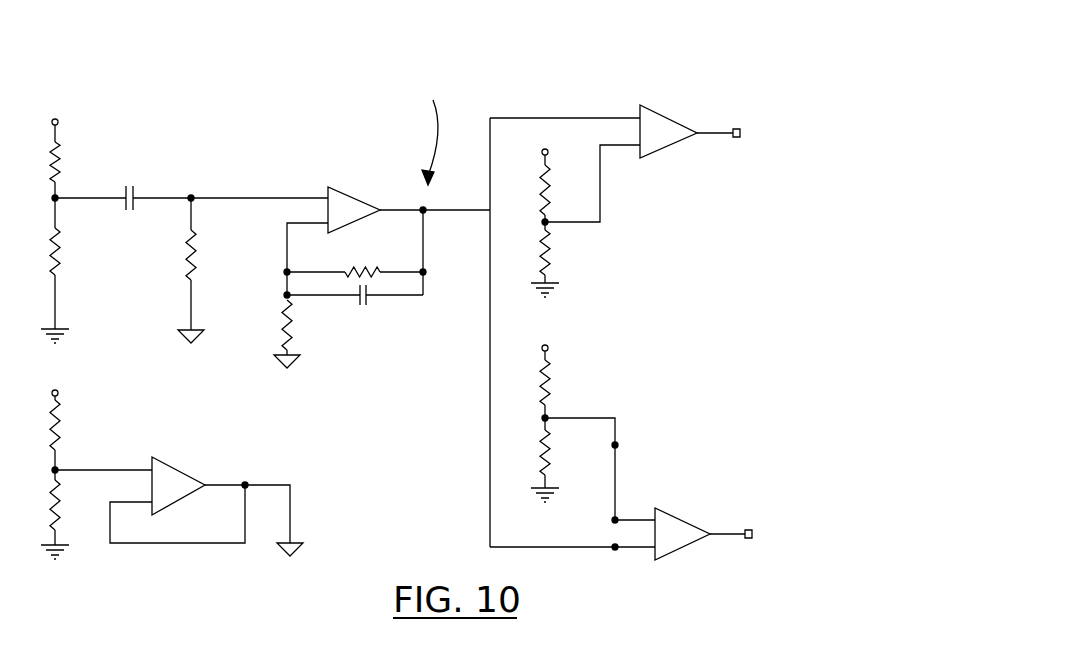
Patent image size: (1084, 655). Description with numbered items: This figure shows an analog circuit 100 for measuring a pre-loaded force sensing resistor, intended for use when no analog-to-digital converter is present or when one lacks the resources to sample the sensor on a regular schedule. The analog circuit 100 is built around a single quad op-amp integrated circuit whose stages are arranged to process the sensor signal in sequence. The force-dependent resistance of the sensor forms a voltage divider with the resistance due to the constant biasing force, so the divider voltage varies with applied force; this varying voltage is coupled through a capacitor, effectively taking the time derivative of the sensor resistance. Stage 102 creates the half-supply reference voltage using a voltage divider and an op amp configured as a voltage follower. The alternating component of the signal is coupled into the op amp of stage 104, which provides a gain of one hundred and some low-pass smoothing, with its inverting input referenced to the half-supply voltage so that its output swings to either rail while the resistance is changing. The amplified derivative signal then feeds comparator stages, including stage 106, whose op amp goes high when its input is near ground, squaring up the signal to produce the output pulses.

The analog circuit 100 is at (828, 45).
The stage 102 is at (230, 442).
The stage 104 is at (167, 174).
The stage 106 is at (705, 86).